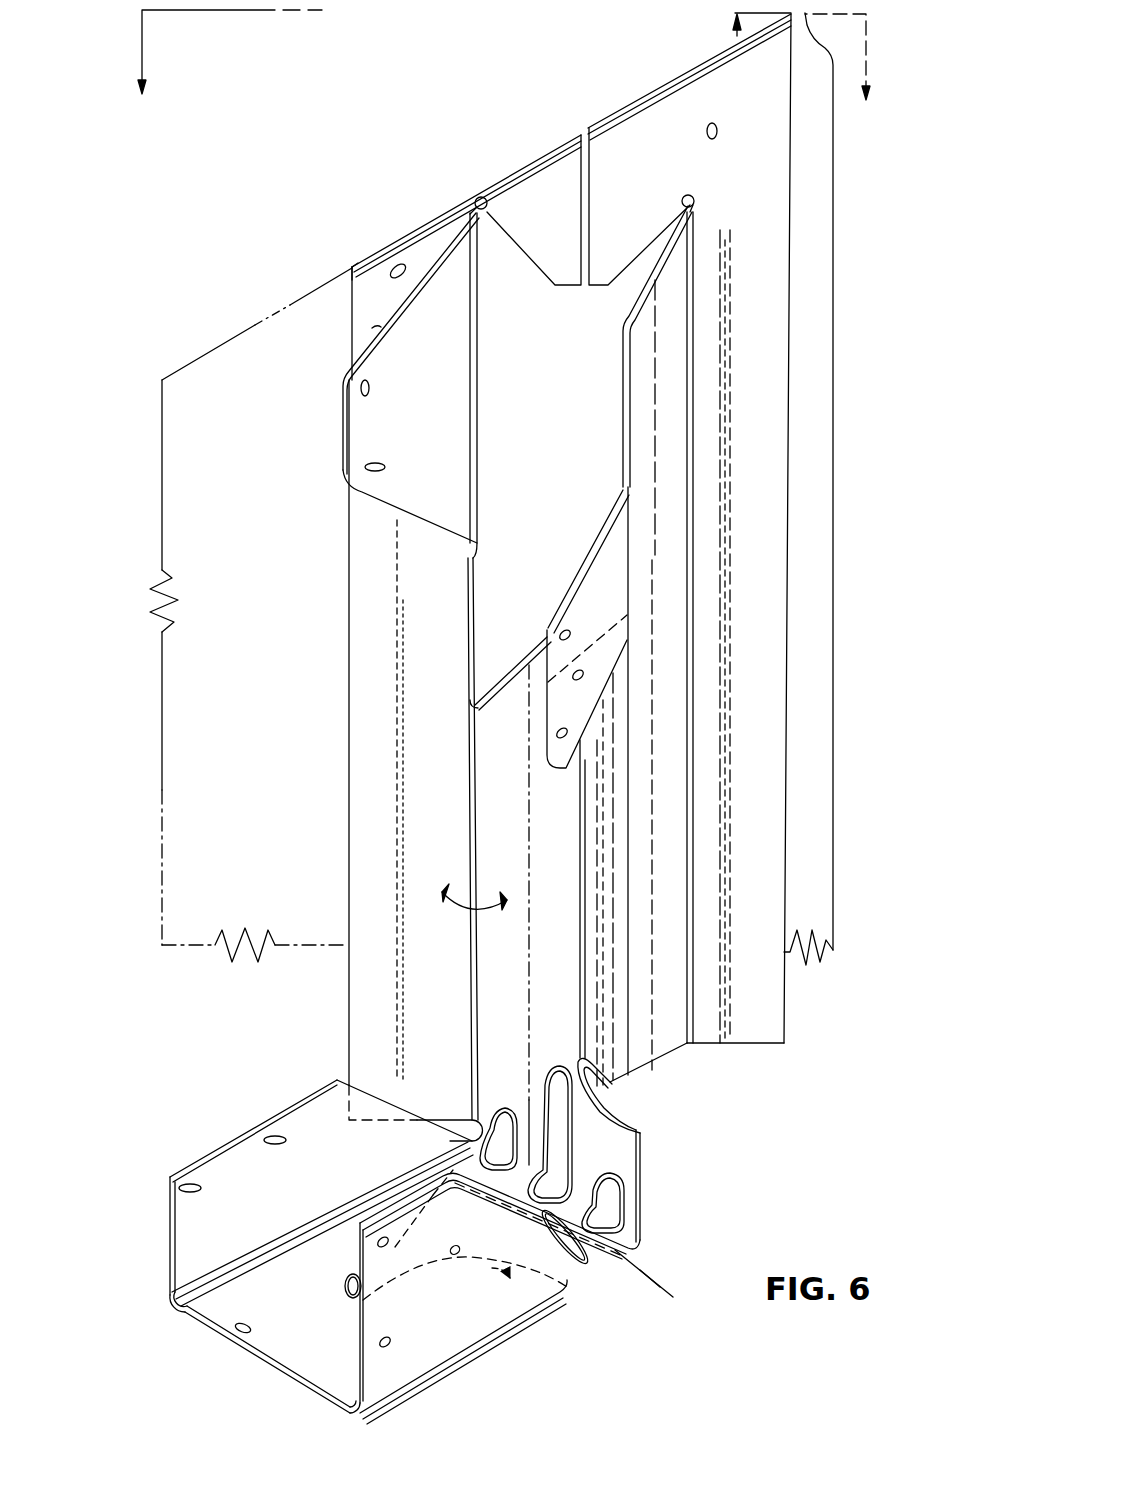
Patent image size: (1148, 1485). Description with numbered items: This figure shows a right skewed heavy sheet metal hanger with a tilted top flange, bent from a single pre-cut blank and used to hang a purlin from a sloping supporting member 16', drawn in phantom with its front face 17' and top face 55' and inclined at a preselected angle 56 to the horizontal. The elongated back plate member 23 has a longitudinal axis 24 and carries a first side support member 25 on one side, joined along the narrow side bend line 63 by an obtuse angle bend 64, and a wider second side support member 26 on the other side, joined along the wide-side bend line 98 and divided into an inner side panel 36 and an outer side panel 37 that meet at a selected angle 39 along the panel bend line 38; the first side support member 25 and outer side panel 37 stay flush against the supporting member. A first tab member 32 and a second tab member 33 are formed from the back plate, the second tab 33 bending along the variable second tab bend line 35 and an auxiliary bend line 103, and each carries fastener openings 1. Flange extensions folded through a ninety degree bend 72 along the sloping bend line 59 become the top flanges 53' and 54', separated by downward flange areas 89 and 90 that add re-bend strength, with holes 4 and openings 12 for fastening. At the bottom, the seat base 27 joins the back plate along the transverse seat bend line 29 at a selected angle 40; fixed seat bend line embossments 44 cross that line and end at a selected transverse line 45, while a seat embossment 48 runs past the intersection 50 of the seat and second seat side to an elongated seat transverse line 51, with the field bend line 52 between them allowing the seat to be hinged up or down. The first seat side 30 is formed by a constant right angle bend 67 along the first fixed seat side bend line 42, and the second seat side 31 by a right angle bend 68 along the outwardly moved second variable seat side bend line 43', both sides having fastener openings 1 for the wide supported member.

The fastener openings 12 is at (509, 77).
The sloping supporting member 16' is at (291, 274).
The front face 17' is at (251, 615).
The first side support member 25 is at (346, 758).
The second side support member 26 is at (792, 694).
The back plate member 23 is at (541, 845).
The longitudinal axis 24 is at (529, 990).
The seat base 27 is at (273, 1350).
The seat bend line 29 is at (643, 1250).
The first seat side 30 is at (168, 1235).
The second seat side 31 is at (358, 1246).
The first tab member 32 is at (343, 418).
The second tab member 33 is at (547, 650).
The second tab bend line 35 is at (627, 398).
The inner side panel 36 is at (657, 1061).
The outer side panel 37 is at (760, 1046).
The panel bend line 38 is at (687, 813).
The selected angle 39 is at (713, 1046).
The selected angle 40 is at (626, 1230).
The first fixed seat side bend line 42 is at (287, 1240).
The second variable seat side bend line 43' is at (463, 1352).
The fixed seat bend line embossments 44 is at (500, 1108).
The selected transverse line 45 is at (667, 1279).
The seat embossment 48 is at (420, 1277).
The intersection 50 is at (508, 1288).
The elongated seat transverse line 51 is at (565, 1237).
The field bend line 52 is at (660, 1289).
The top flange 53' is at (466, 206).
The top flange 54' is at (689, 77).
The top face 55' is at (349, 257).
The preselected angle 56 is at (737, 36).
The sloping bend line 59 is at (360, 255).
The narrow side bend line 63 is at (468, 822).
The obtuse angle bend 64 is at (468, 908).
The constant right angle bend 67 is at (193, 1313).
The right angle bend 68 is at (352, 1378).
The 90° bend 72 is at (350, 280).
The downward flange area 89 is at (561, 247).
The downward flange area 90 is at (629, 245).
The wide-side bend line 98 is at (583, 878).
The auxiliary bend line 103 is at (625, 630).
The fastener openings 1 is at (370, 386).
The holes 4 is at (707, 131).